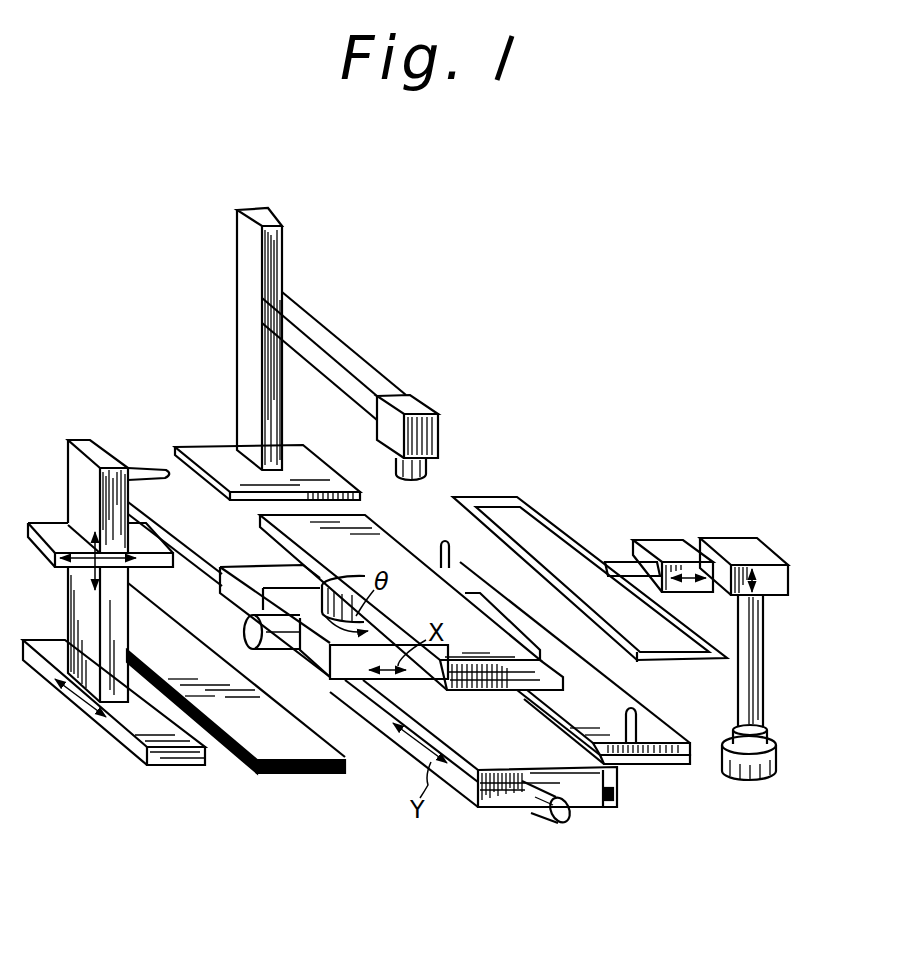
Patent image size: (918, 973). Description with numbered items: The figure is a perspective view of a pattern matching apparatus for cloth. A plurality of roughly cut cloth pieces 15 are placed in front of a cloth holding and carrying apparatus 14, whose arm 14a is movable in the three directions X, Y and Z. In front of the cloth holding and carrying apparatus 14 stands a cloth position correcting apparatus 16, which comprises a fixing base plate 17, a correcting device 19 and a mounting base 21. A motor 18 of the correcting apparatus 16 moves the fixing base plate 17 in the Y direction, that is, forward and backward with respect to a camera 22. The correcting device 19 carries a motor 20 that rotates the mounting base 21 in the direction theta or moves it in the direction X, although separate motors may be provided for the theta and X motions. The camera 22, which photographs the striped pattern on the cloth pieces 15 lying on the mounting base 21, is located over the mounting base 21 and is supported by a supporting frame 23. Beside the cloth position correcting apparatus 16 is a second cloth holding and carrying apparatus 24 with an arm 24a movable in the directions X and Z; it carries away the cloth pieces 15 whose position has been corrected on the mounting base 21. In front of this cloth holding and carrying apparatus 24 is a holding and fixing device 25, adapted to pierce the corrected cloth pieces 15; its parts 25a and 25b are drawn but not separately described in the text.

The cloth holding and carrying apparatus 14 is at (135, 752).
The arm 14a is at (158, 466).
The cloth pieces 15 is at (293, 774).
The cloth position correcting apparatus 16 is at (478, 816).
The fixing base plate 17 is at (603, 810).
The motor 18 is at (540, 820).
The correcting device 19 is at (360, 668).
The motor 20 is at (283, 652).
The mounting base 21 is at (378, 538).
The camera 22 is at (434, 435).
The supporting frame 23 is at (246, 343).
The cloth holding and carrying apparatus 24 is at (764, 672).
The arm 24a is at (549, 511).
The holding and fixing device 25 is at (693, 768).
The stopper pin 25a is at (452, 545).
The stopper pin 25b is at (636, 732).